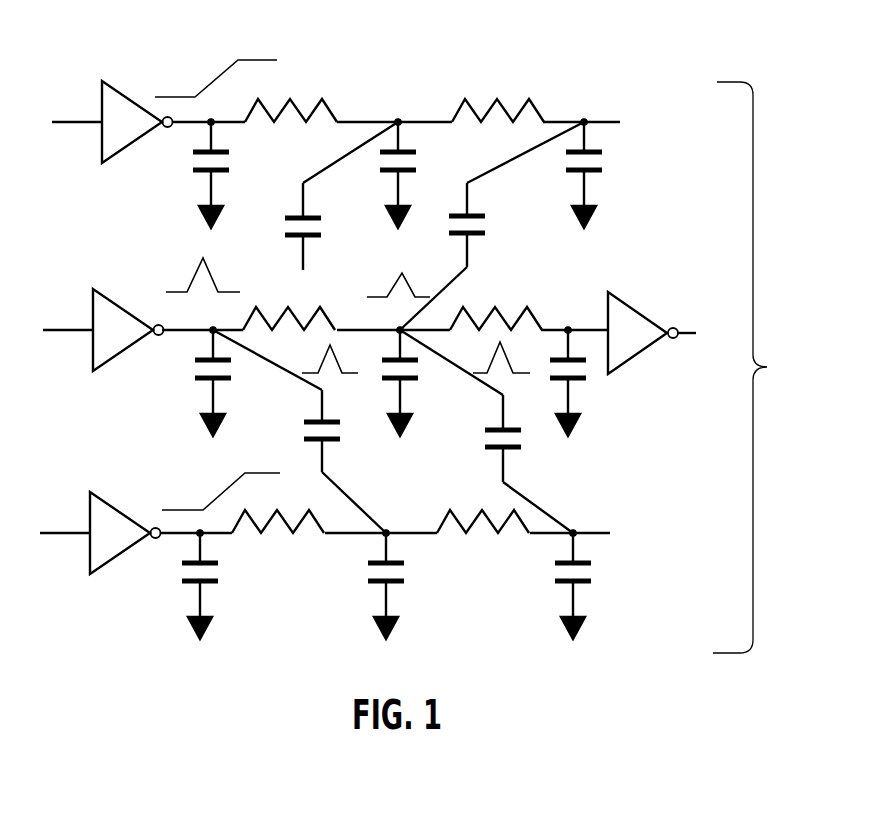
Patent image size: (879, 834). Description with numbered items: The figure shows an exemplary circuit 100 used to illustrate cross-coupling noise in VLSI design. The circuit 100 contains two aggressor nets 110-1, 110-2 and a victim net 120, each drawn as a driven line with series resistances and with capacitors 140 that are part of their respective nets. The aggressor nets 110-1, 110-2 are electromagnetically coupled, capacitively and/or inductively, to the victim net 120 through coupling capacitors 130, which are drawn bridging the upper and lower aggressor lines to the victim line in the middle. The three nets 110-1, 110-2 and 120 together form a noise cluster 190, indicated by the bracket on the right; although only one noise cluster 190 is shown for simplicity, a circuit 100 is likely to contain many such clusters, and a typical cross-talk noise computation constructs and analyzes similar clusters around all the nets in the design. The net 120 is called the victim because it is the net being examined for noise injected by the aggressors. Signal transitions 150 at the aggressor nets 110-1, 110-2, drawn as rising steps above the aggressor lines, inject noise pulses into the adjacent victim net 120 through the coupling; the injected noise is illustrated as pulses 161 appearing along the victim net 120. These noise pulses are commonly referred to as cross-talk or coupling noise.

The circuit 100 is at (795, 18).
The aggressor net 110-1 is at (468, 62).
The aggressor net 110-2 is at (614, 505).
The victim net 120 is at (644, 284).
The capacitors 130 is at (322, 228).
The capacitors 140 is at (192, 161).
The signal transitions 150 is at (244, 58).
The pulses 161 is at (213, 275).
The noise cluster 190 is at (767, 367).